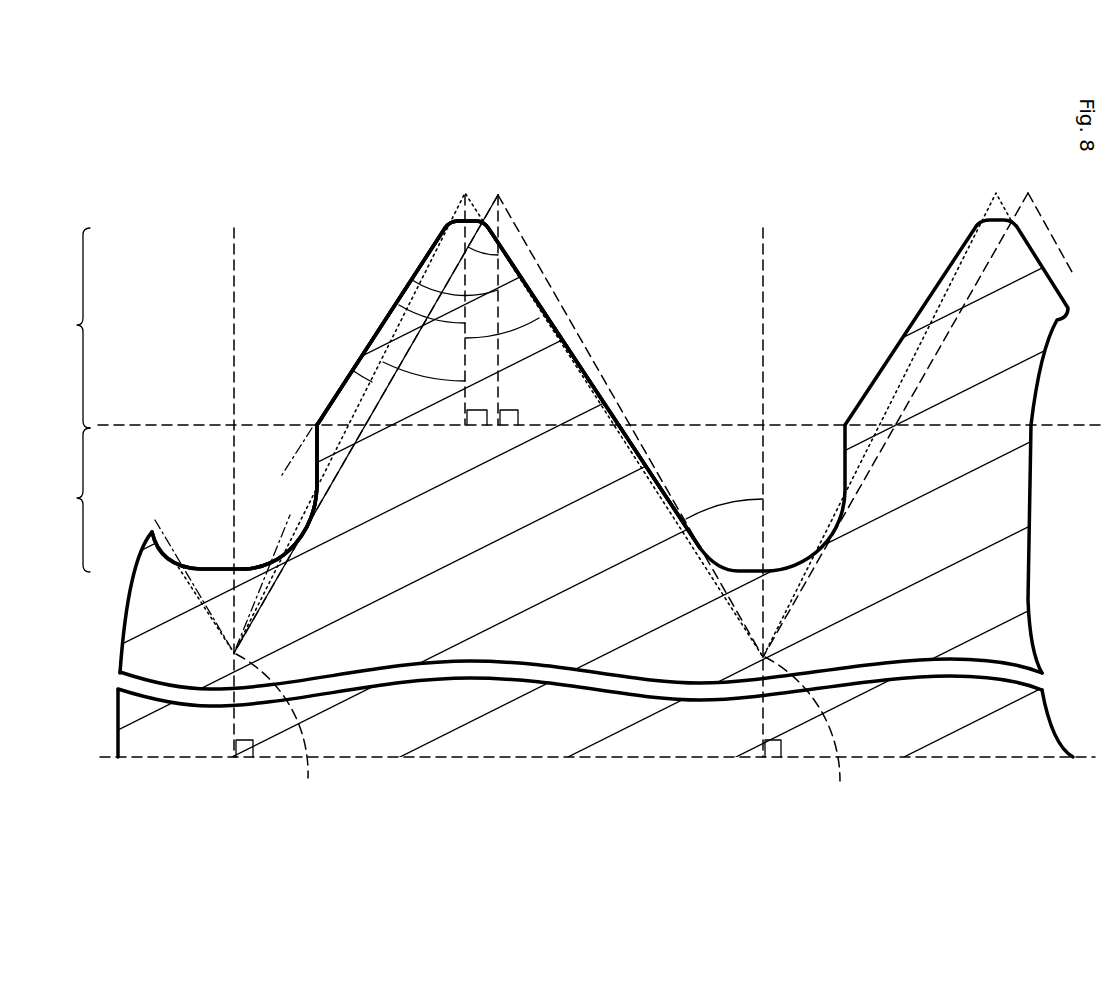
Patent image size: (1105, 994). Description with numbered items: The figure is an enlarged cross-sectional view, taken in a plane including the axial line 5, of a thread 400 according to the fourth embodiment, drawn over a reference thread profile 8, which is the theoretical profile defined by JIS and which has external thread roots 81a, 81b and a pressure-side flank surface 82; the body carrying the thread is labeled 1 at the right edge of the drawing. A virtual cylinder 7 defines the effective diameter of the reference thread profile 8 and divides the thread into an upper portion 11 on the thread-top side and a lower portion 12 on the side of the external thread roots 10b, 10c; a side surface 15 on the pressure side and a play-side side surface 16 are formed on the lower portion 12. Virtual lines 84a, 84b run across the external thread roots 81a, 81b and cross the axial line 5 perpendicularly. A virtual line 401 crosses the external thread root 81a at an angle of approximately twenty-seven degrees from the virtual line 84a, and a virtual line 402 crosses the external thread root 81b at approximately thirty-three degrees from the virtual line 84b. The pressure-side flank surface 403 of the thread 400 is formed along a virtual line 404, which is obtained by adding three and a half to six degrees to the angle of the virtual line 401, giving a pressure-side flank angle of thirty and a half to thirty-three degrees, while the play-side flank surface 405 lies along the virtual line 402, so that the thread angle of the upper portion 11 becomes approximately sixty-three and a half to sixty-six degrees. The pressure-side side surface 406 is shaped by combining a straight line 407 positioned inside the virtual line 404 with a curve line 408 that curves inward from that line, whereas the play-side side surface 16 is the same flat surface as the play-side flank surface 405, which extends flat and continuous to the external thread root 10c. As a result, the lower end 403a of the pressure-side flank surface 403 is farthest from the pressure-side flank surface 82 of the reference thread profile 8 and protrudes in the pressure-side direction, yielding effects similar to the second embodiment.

The saw blade body 1 is at (1031, 576).
The axial line 5 is at (1084, 757).
The virtual cylinder 7 is at (112, 425).
The reference thread profile 8 is at (517, 222).
The upper portion 11 is at (72, 328).
The lower portion 12 is at (72, 500).
The side surface 15 is at (246, 568).
The play-side side surface 16 is at (658, 480).
The external thread root 10b is at (210, 566).
The external thread root 10c is at (780, 562).
The external thread root 81a is at (284, 729).
The external thread root 81b is at (820, 731).
The pressure-side flank surface 82 is at (380, 442).
The virtual line 84a is at (232, 243).
The virtual line 84b is at (768, 243).
The thread 400 is at (430, 165).
The virtual line 401 is at (355, 382).
The virtual line 402 is at (726, 598).
The pressure-side flank surface 403 is at (387, 317).
The lower end 403a is at (314, 427).
The virtual line 404 is at (233, 540).
The play-side flank surface 405 is at (601, 390).
The pressure-side side surface 406 is at (402, 473).
The straight line 407 is at (318, 452).
The curve line 408 is at (310, 512).